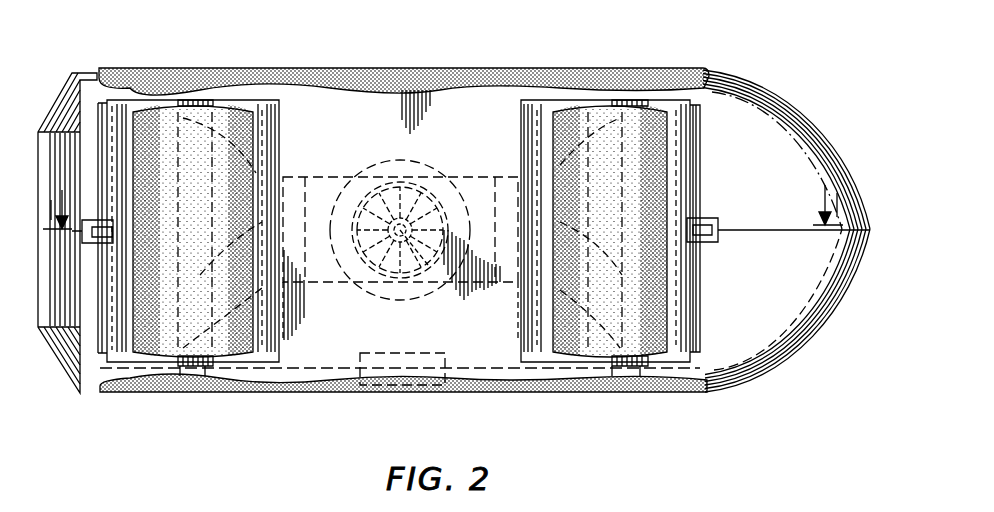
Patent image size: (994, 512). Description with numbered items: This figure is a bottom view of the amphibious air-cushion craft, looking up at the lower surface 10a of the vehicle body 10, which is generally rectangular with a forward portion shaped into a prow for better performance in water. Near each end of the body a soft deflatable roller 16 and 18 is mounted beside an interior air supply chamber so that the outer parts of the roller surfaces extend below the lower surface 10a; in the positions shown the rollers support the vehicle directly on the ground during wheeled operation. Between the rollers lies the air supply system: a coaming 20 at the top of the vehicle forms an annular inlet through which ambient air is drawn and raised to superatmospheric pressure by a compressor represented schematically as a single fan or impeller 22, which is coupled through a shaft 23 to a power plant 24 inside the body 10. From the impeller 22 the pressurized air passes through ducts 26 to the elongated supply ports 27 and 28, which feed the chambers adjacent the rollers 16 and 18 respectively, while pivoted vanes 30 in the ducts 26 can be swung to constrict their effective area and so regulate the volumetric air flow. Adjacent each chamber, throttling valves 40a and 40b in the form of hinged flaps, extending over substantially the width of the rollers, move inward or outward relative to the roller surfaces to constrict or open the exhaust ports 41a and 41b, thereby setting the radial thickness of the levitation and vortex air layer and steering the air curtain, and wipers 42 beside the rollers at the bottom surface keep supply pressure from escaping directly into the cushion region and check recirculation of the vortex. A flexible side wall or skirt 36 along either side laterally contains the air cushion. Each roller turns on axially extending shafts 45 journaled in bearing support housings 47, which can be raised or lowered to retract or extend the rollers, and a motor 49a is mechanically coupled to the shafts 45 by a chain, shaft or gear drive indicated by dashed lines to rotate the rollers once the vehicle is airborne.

The vehicle body 10 is at (767, 118).
The lower surface of the vehicle 10a is at (509, 355).
The soft deflatable roller 16 is at (642, 127).
The soft deflatable roller 18 is at (153, 125).
The coaming 20 is at (368, 172).
The fan or impeller 22 is at (386, 290).
The shaft 23 is at (440, 287).
The power plant 24 is at (437, 167).
The ducts 26 is at (318, 298).
The elongated supply port 27 is at (608, 231).
The elongated supply port 28 is at (220, 231).
The pivoted vanes 30 is at (313, 183).
The flexible side wall or skirt 36 is at (432, 70).
The throttling valve 40a is at (685, 165).
The throttling valve 40b is at (107, 333).
The exhaust port 41a is at (670, 103).
The exhaust port 41b is at (131, 122).
The wipers 42 is at (265, 150).
The roller shaft 45 is at (178, 374).
The bearing support housing 47 is at (198, 96).
The motor 49a is at (365, 353).